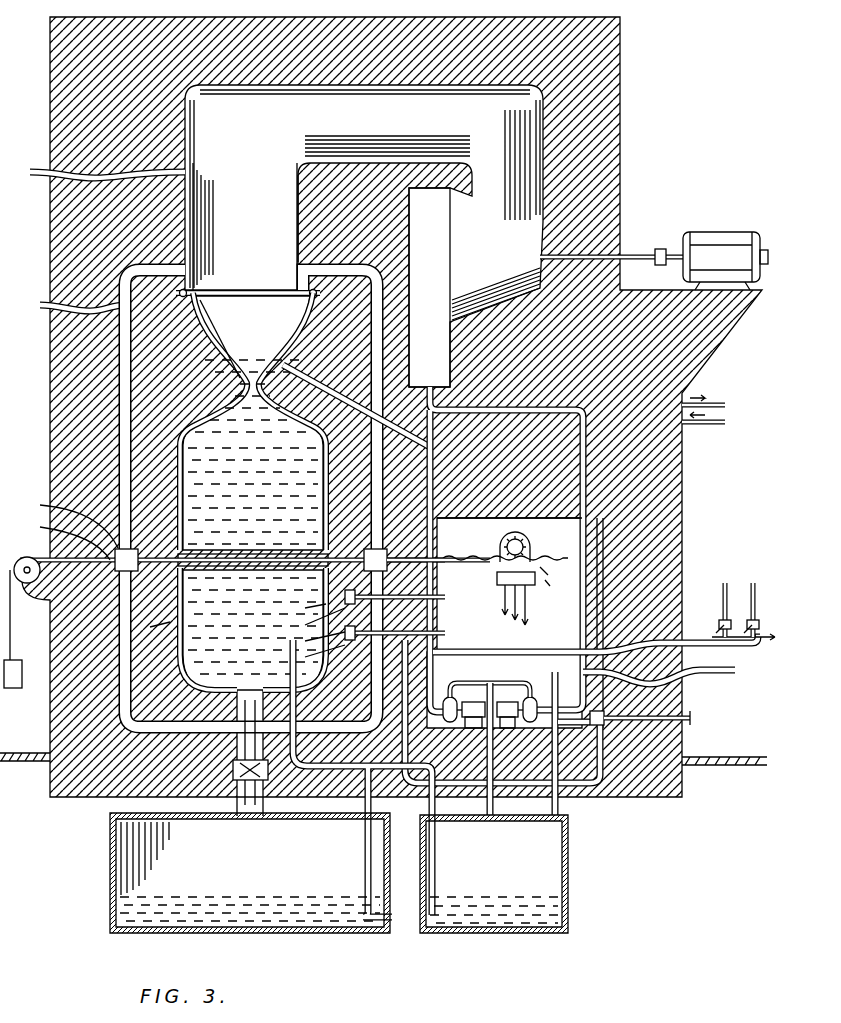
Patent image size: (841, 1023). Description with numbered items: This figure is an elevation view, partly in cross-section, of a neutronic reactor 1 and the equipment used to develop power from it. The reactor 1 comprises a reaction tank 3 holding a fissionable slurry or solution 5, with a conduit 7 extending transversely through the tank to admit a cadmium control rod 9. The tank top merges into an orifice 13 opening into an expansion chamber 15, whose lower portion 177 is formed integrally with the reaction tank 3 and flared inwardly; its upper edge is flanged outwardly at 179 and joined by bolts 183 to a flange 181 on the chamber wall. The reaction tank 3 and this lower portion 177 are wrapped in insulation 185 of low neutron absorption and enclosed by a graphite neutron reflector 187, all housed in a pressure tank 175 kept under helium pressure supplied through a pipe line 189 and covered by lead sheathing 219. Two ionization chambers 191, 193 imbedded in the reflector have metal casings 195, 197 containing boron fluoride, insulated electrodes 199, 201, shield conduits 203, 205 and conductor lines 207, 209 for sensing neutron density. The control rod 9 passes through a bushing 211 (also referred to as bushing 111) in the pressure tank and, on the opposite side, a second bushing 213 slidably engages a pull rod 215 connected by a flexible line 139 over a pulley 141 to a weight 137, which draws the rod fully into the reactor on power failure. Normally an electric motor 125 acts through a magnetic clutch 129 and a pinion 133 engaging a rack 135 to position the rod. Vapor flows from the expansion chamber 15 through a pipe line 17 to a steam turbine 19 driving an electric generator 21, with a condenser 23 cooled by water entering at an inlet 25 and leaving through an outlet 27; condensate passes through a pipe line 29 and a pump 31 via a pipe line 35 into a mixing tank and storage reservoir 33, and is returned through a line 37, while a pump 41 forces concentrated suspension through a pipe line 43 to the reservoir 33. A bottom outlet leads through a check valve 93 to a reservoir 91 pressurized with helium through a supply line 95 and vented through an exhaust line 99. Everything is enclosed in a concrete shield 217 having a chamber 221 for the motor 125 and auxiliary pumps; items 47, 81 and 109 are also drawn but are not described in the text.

The reactor 1 is at (153, 627).
The reaction tank 3 is at (195, 630).
The slurry or solution 5 is at (180, 478).
The conduit 7 is at (232, 568).
The control rod 9 is at (305, 566).
The orifice 13 is at (255, 365).
The expansion chamber 15 is at (300, 228).
The pipe line 17 is at (452, 88).
The steam turbine 19 is at (500, 305).
The electric generator 21 is at (720, 236).
The condenser 23 is at (409, 205).
The inlet 25 is at (725, 420).
The outlet 27 is at (725, 400).
The pipe line 29 is at (548, 408).
The pump 31 is at (540, 690).
The mixing tank and storage reservoir 33 is at (570, 862).
The pipe line 35 is at (505, 683).
The line 37 is at (455, 870).
The pump 41 is at (448, 694).
The pipe line 43 is at (475, 700).
The pipe 47 is at (35, 178).
The pipe 81 is at (735, 675).
The reservoir 91 is at (305, 933).
The check valve 93 is at (236, 812).
The supply line 95 is at (722, 590).
The exhaust line 99 is at (750, 590).
The valve 109 is at (672, 700).
The bushing 111 is at (400, 925).
The electric motor 125 is at (528, 585).
The magnetic clutch 129 is at (530, 545).
The pinion 133 is at (510, 542).
The rack 135 is at (465, 556).
The weight 137 is at (12, 690).
The flexible line 139 is at (10, 628).
The pulley 141 is at (22, 552).
The pressure tank 175 is at (416, 388).
The expansion chamber portion 177 is at (300, 330).
The flange 179 is at (344, 257).
The flange 181 is at (175, 291).
The bolts 183 is at (329, 218).
The insulation 185 is at (170, 420).
The neutron reflector 187 is at (345, 668).
The pipe line 189 is at (40, 312).
The ionization chamber 191 is at (255, 566).
The ionization chamber 193 is at (383, 605).
The metal casing 195 is at (309, 620).
The metal casing 197 is at (309, 654).
The insulated electrode 199 is at (303, 605).
The insulated electrode 201 is at (311, 638).
The shield conduit 203 is at (435, 566).
The shield conduit 205 is at (438, 618).
The conductor line 207 is at (445, 596).
The conductor line 209 is at (450, 633).
The bushing 211 is at (392, 520).
The second bushing 213 is at (60, 518).
The pull rod 215 is at (56, 534).
The shield 217 is at (700, 737).
The lead sheathing 219 is at (120, 380).
The chamber 221 is at (597, 530).